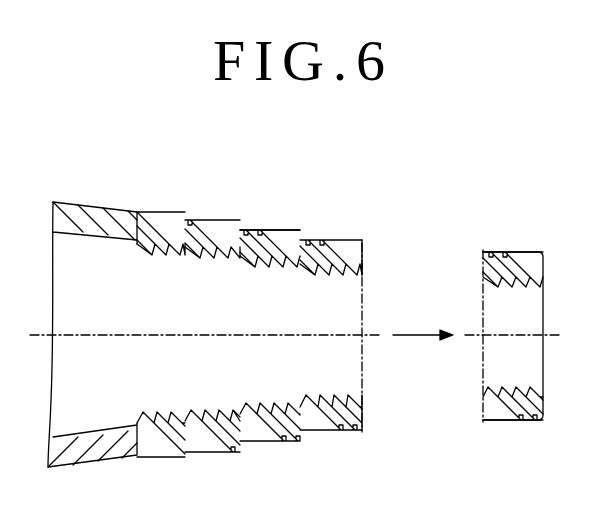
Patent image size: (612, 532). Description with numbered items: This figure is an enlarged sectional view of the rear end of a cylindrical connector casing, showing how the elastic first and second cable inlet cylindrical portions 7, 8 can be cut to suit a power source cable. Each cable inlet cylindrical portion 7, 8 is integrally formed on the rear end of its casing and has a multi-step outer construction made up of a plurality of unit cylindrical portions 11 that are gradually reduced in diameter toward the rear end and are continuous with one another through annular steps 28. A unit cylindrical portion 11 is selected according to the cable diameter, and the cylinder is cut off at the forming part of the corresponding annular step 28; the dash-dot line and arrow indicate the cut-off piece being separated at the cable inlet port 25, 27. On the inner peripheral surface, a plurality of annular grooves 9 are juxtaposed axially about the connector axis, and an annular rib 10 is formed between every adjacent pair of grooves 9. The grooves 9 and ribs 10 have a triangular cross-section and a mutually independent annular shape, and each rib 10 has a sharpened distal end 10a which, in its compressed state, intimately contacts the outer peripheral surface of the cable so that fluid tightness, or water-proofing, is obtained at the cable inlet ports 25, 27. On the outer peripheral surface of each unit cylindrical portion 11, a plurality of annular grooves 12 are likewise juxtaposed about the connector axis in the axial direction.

The first cable inlet cylindrical portion 7 is at (102, 307).
The second cable inlet cylindrical portion 8 is at (157, 212).
The annular grooves 9 is at (285, 262).
The annular ribs 10 is at (231, 250).
The sharpened distal end 10a is at (186, 250).
The unit cylindrical portions 11 is at (333, 242).
The annular grooves 12 is at (248, 242).
The cable inlet port 25 is at (409, 355).
The cable inlet port 27 is at (358, 362).
The annular steps 28 is at (240, 438).